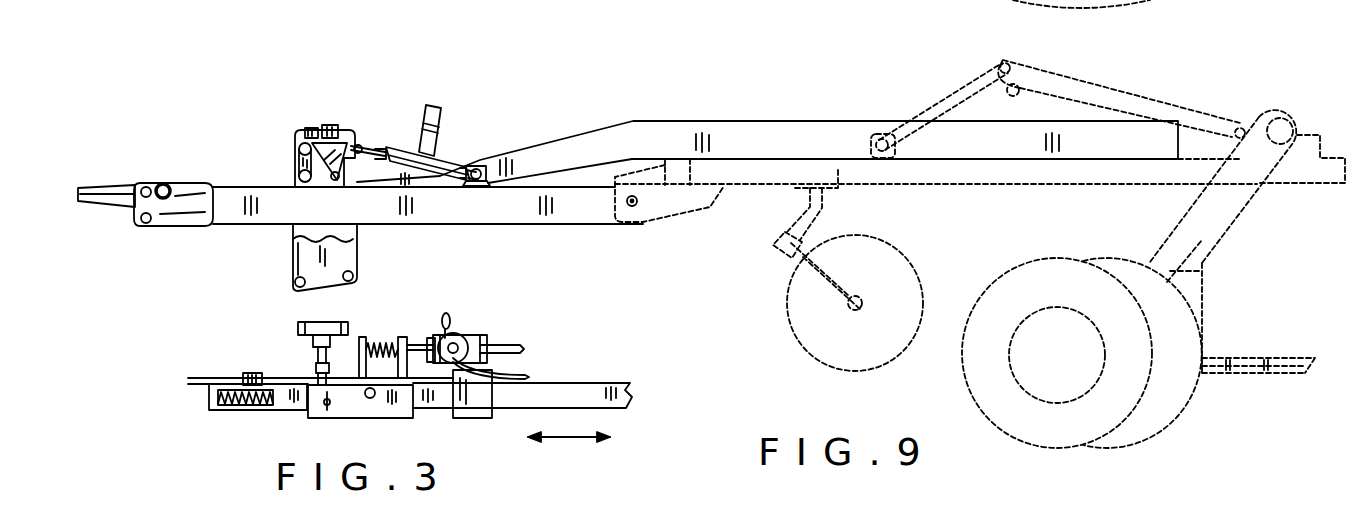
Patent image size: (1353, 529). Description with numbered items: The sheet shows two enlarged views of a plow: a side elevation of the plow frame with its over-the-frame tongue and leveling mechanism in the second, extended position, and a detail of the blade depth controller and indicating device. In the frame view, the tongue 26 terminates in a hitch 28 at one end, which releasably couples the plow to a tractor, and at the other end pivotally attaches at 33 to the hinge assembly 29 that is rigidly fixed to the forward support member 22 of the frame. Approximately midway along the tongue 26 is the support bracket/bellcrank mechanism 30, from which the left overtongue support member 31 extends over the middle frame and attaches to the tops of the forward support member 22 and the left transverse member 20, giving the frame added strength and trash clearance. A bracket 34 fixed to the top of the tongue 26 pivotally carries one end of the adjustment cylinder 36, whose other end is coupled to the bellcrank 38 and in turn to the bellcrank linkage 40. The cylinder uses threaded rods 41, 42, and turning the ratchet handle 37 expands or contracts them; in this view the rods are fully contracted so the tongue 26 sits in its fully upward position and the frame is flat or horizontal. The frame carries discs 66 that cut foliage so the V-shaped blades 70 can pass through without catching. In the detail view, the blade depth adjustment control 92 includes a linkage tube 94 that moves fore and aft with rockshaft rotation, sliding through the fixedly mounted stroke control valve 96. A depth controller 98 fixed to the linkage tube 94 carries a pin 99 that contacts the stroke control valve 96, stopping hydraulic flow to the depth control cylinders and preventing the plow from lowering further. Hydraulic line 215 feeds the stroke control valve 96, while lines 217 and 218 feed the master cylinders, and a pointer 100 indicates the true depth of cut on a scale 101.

In FIG. 9, the left transverse member 20 is at (973, 172).
In FIG. 9, the forward support member 22 is at (682, 173).
In FIG. 9, the tongue 26 is at (452, 213).
In FIG. 9, the hitch 28 is at (100, 188).
In FIG. 9, the hinge assembly 29 is at (655, 210).
In FIG. 9, the support bracket/bellcrank mechanism 30 is at (279, 171).
In FIG. 9, the left overtongue support member 31 is at (765, 135).
In FIG. 9, the pivotal attachment 33 is at (626, 207).
In FIG. 9, the bracket 34 is at (500, 160).
In FIG. 9, the adjustment cylinder 36 is at (397, 150).
In FIG. 9, the ratchet handle 37 is at (437, 120).
In FIG. 9, the bellcrank 38 is at (320, 130).
In FIG. 9, the bellcrank linkage 40 is at (278, 168).
In FIG. 9, the threaded rod 41 is at (461, 161).
In FIG. 9, the threaded rod 42 is at (378, 145).
In FIG. 9, the disc 66 is at (905, 280).
In FIG. 9, the V-shaped blade 70 is at (1243, 367).
In FIG. 3, the blade depth adjustment control 92 is at (277, 347).
In FIG. 3, the linkage tube 94 is at (582, 385).
In FIG. 3, the stroke control valve 96 is at (453, 345).
In FIG. 3, the depth controller 98 is at (352, 412).
In FIG. 3, the pin 99 is at (382, 340).
In FIG. 3, the pointer 100 is at (262, 412).
In FIG. 3, the scale 101 is at (220, 410).
In FIG. 3, the hydraulic line 215 is at (510, 347).
In FIG. 3, the hydraulic line 217 is at (441, 316).
In FIG. 3, the hydraulic line 218 is at (523, 376).